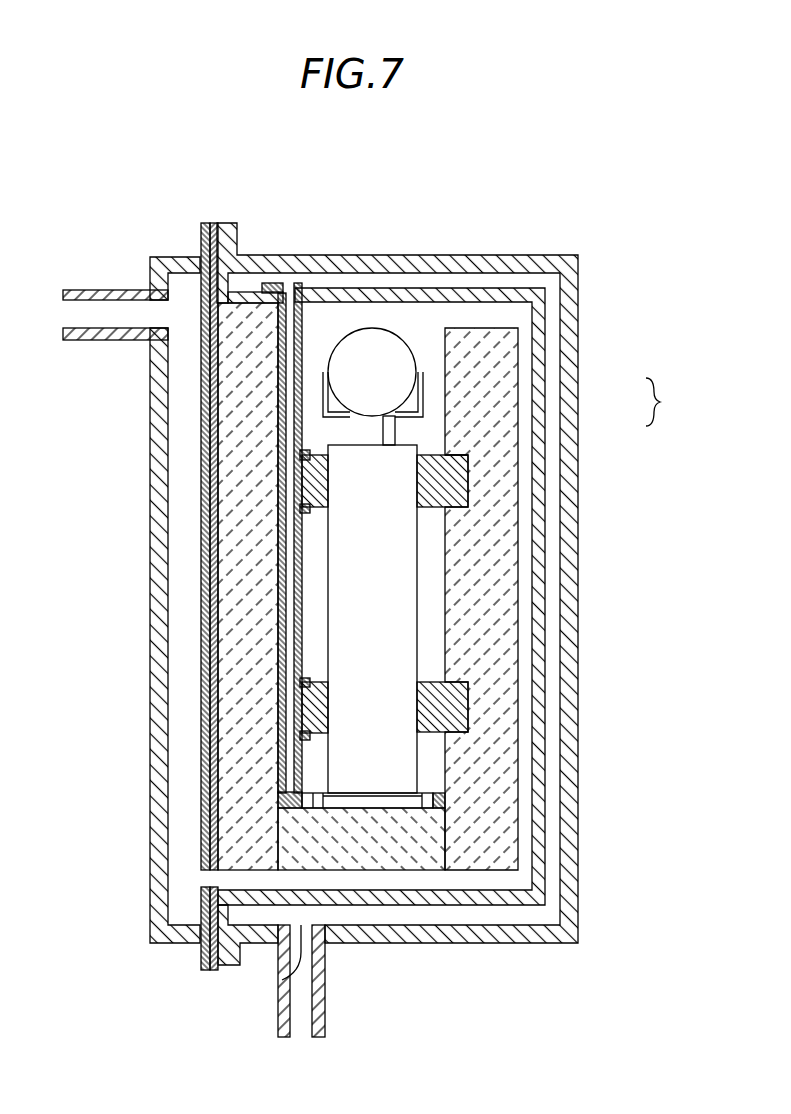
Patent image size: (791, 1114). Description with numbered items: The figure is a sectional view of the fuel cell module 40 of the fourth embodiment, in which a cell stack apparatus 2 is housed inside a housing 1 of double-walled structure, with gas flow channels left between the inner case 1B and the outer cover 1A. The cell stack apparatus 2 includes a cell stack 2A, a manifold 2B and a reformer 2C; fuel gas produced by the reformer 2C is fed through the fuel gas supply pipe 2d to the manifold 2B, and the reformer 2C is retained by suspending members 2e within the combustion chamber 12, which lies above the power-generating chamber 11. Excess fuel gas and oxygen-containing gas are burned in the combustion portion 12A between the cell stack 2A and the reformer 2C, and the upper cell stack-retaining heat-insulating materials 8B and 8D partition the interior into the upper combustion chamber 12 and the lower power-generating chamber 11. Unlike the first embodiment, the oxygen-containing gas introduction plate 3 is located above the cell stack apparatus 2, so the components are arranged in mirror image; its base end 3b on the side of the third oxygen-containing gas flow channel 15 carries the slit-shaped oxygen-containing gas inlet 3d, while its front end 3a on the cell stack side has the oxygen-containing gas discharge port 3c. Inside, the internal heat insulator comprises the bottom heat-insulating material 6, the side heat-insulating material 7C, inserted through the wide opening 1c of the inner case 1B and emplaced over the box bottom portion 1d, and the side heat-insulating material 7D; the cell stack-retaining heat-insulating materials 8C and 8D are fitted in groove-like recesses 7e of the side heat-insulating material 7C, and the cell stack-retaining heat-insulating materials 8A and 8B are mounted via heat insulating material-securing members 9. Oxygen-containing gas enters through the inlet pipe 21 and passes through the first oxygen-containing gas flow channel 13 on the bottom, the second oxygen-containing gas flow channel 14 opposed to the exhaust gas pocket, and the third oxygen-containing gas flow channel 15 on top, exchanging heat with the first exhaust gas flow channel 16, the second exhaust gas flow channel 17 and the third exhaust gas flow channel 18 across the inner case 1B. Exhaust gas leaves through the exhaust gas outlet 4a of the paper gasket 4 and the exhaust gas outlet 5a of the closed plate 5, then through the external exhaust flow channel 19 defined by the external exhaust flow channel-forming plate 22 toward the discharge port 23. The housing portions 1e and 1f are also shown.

The housing 1 is at (416, 583).
The outer cover 1A is at (236, 223).
The inner case 1B is at (225, 223).
The wide opening 1c is at (216, 318).
The box bottom portion 1d is at (548, 622).
The housing partition 1e is at (293, 502).
The drain curve 1f is at (290, 972).
The cell stack apparatus 2 is at (473, 563).
The cell stack 2A is at (372, 619).
The manifold 2B is at (388, 802).
The reformer 2C is at (372, 372).
The fuel gas supply pipe 2d is at (396, 432).
The suspending members 2e is at (327, 368).
The oxygen-containing gas introduction plate 3 is at (361, 545).
The front end 3a is at (290, 800).
The base end 3b is at (300, 310).
The oxygen-containing gas discharge port 3c is at (296, 790).
The oxygen-containing gas inlet 3d is at (292, 290).
The paper gasket 4 is at (209, 560).
The exhaust gas outlet 4a is at (214, 928).
The closed plate 5 is at (127, 558).
The exhaust gas outlet 5a is at (210, 880).
The bottom heat-insulating material 6 is at (361, 839).
The side heat-insulating material 7C is at (481, 599).
The left block 7D is at (248, 586).
The groove-like recesses 7e is at (462, 457).
The cell stack-retaining heat-insulating material 8A is at (318, 720).
The cell stack-retaining heat-insulating material 8B is at (318, 493).
The cell stack-retaining heat-insulating material 8C is at (425, 690).
The cell stack-retaining heat-insulating material 8D is at (425, 466).
The heat insulating material-securing members 9 is at (304, 510).
The power-generating chamber 11 is at (430, 566).
The combustion chamber 12 is at (312, 371).
The combustion portion 12A is at (373, 437).
The first oxygen-containing gas flow channel 13 is at (441, 913).
The second oxygen-containing gas flow channel 14 is at (553, 783).
The third oxygen-containing gas flow channel 15 is at (414, 280).
The first exhaust gas flow channel 16 is at (478, 316).
The second exhaust gas flow channel 17 is at (520, 828).
The third exhaust gas flow channel 18 is at (362, 885).
The external exhaust flow channel 19 is at (186, 683).
The oxygen-containing gas inlet pipe 21 is at (280, 1022).
The external exhaust flow channel-forming plate 22 is at (150, 520).
The discharge port 23 is at (103, 288).
The fuel cell module 40 is at (570, 252).